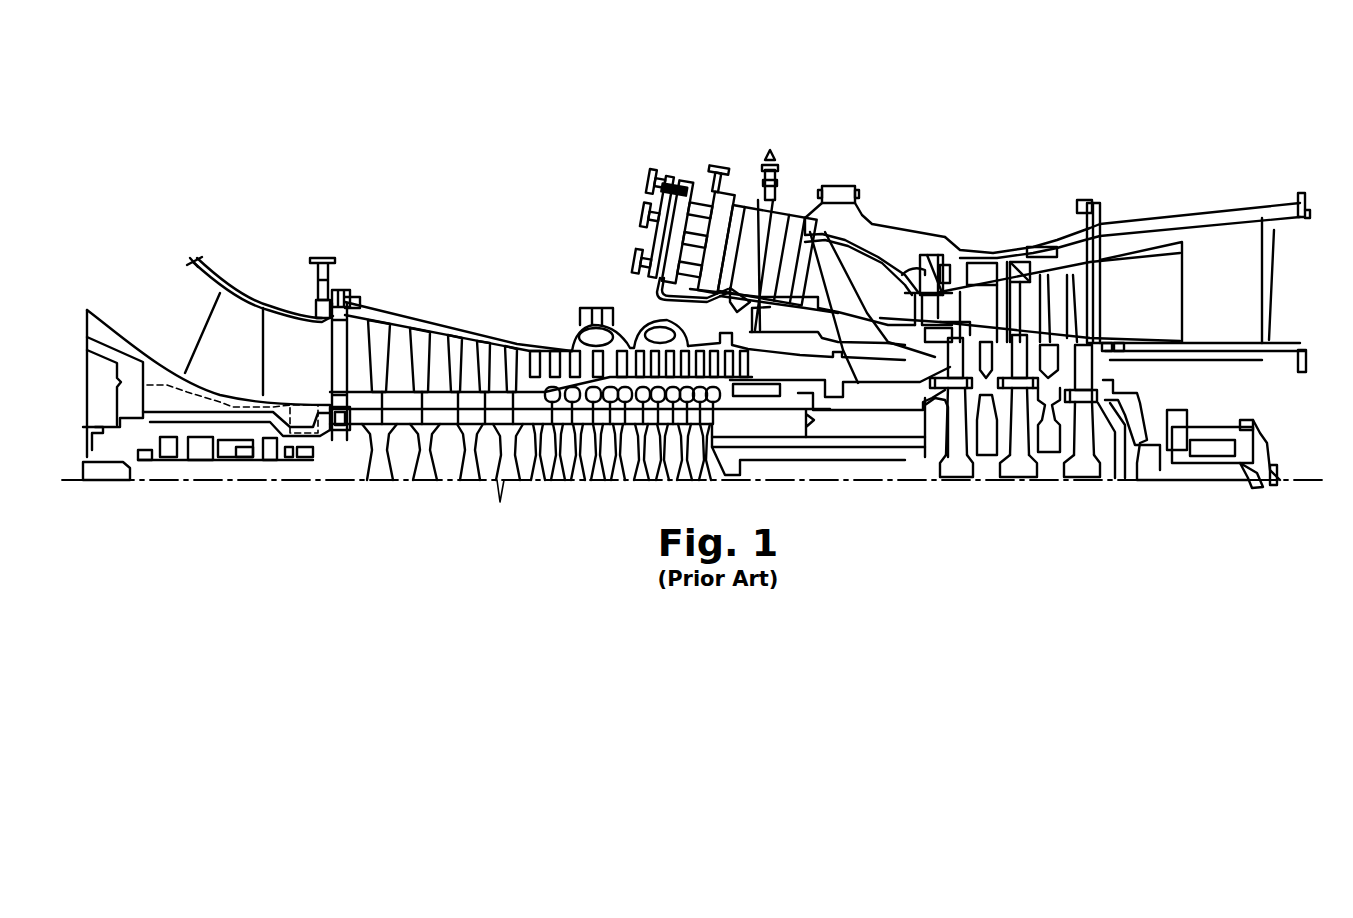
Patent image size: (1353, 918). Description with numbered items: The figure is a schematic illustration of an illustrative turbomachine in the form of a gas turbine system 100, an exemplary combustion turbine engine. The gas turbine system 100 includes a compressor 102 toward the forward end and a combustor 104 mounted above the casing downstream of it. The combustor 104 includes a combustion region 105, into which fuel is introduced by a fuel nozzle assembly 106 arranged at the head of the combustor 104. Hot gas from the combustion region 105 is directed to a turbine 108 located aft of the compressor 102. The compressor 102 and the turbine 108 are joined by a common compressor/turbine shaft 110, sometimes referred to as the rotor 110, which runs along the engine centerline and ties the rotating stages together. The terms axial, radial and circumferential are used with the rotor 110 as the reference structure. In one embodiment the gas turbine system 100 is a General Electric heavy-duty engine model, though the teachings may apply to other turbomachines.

The gas turbine system 100 is at (240, 135).
The compressor 102 is at (432, 327).
The combustor 104 is at (780, 135).
The combustion region 105 is at (760, 237).
The fuel nozzle assembly 106 is at (697, 188).
The turbine 108 is at (1062, 247).
The common compressor/turbine shaft 110 is at (360, 428).